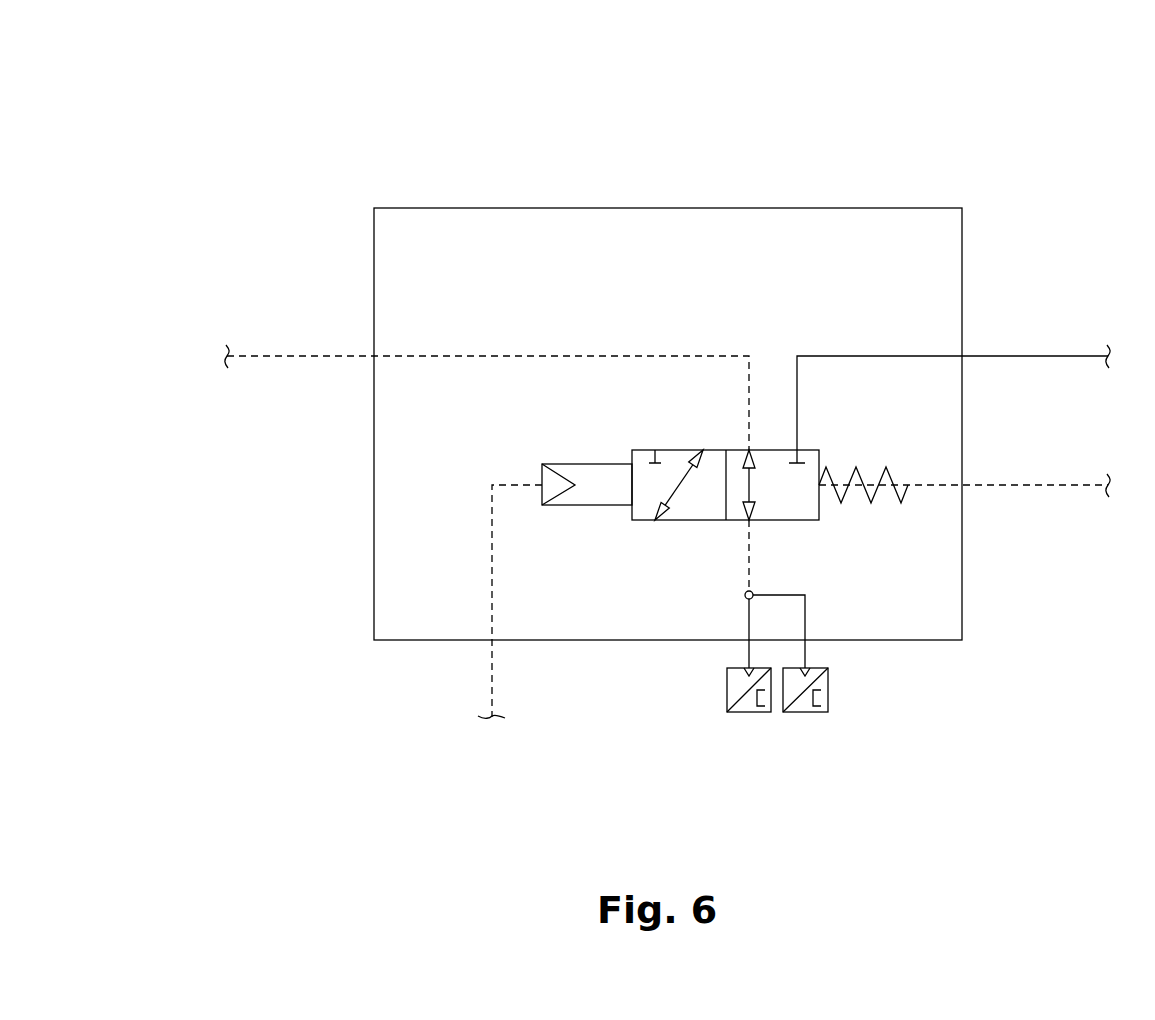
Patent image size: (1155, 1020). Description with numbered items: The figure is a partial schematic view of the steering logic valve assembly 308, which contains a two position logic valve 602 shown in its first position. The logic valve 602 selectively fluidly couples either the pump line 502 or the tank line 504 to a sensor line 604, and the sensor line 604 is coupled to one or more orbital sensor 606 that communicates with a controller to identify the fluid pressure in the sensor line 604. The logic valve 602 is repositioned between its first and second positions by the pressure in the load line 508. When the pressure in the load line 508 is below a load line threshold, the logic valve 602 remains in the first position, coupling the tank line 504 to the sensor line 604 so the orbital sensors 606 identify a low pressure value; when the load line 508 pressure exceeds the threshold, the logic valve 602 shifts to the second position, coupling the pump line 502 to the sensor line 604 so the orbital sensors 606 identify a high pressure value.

The steering logic valve assembly 308 is at (452, 148).
The pump line 502 is at (1040, 356).
The tank line 504 is at (298, 355).
The load line 508 is at (492, 675).
The two position logic valve 602 is at (688, 520).
The sensor line 604 is at (749, 548).
The orbital sensor 606 is at (828, 690).